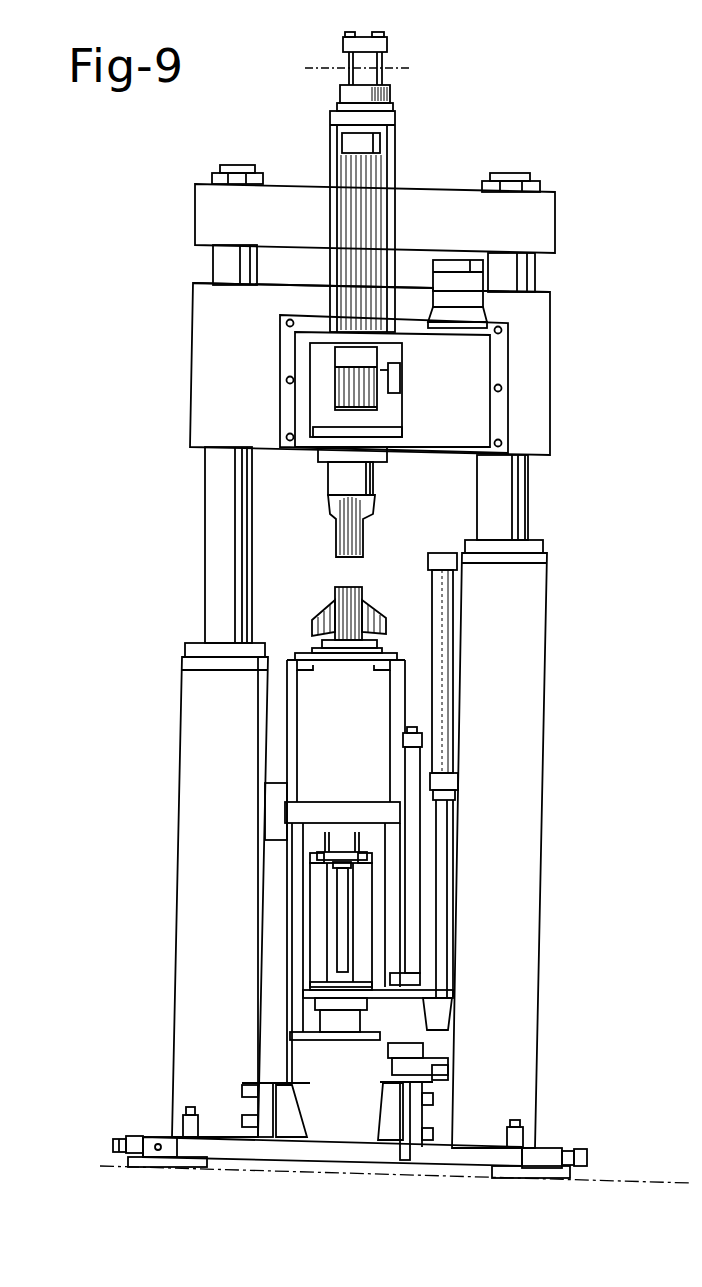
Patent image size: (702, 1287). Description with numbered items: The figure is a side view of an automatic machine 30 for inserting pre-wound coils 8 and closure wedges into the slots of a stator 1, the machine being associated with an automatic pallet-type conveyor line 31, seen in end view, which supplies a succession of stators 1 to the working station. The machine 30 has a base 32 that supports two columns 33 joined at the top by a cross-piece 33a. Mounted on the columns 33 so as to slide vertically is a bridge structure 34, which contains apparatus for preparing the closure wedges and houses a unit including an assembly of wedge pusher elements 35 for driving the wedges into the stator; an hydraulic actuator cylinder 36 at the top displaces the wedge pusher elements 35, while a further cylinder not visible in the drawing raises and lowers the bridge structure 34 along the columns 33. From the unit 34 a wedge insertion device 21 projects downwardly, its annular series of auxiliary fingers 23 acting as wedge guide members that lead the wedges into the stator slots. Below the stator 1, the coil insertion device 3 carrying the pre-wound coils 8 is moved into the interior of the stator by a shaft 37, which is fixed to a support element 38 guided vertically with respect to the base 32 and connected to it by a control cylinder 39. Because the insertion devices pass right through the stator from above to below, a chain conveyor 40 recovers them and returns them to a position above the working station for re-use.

The stator 1 is at (370, 648).
The coil insertion device 3 is at (312, 603).
The pre-wound coils 8 is at (375, 614).
The wedge insertion device 21 is at (390, 505).
The auxiliary fingers 23 is at (343, 540).
The automatic machine 30 is at (152, 322).
The automatic pallet-type conveyor line 31 is at (290, 683).
The base 32 is at (200, 763).
The columns 33 is at (215, 520).
The cross-piece 33a is at (455, 210).
The bridge structure 34 is at (424, 420).
The wedge pusher elements 35 is at (362, 178).
The hydraulic actuator cylinder 36 is at (387, 45).
The shaft 37 is at (340, 912).
The support element 38 is at (405, 1010).
The control cylinder 39 is at (440, 657).
The chain conveyor 40 is at (315, 855).